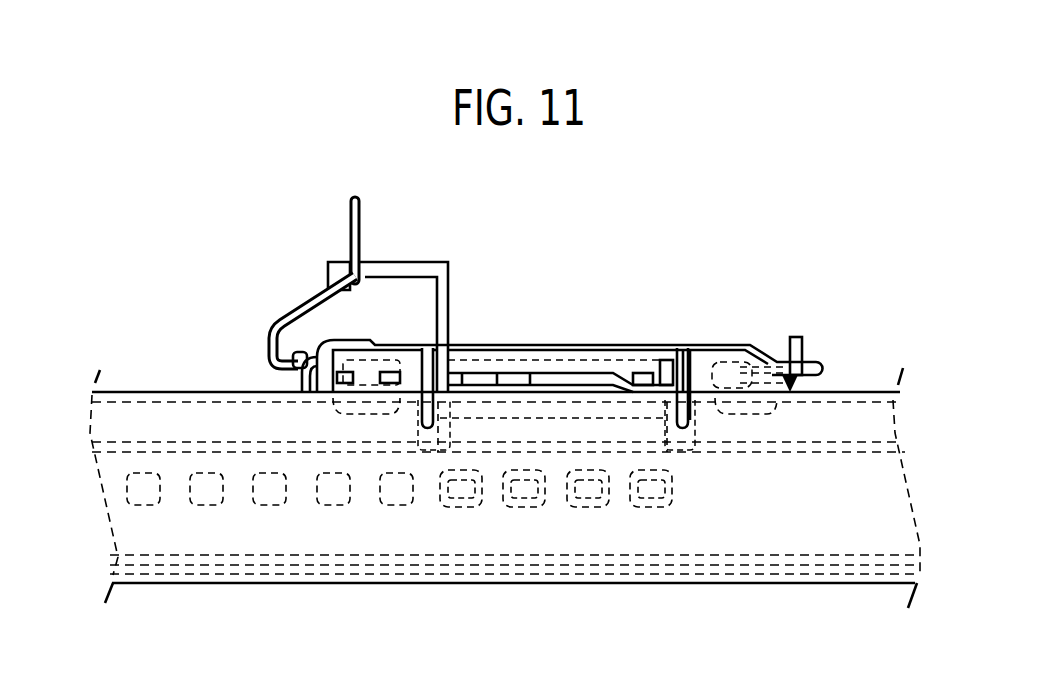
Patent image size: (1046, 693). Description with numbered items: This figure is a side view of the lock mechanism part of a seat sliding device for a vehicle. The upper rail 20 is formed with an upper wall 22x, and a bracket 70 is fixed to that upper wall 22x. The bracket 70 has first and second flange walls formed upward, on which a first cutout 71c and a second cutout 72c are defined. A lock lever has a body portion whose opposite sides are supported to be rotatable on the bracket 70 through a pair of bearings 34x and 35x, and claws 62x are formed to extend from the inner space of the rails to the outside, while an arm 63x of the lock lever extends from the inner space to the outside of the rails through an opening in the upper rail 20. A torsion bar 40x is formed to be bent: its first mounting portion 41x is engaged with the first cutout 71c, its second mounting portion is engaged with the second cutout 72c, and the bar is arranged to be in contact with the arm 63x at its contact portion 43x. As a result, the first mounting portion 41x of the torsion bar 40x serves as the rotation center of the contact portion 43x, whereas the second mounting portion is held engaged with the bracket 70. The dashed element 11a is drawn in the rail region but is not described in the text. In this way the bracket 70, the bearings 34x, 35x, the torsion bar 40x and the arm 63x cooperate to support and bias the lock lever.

The upper rail 20 is at (840, 588).
The upper wall 22x is at (853, 393).
The recess holes 11a is at (592, 507).
The claws 62x is at (657, 507).
The bearing 34x is at (440, 452).
The bearing 35x is at (673, 452).
The bracket 70 is at (578, 340).
The arm 63x is at (443, 305).
The contact portion 43x is at (353, 265).
The torsion bar 40x is at (300, 298).
The first cutout 71c is at (303, 350).
The first mounting portion 41x is at (292, 368).
The second cutout 72c is at (797, 337).